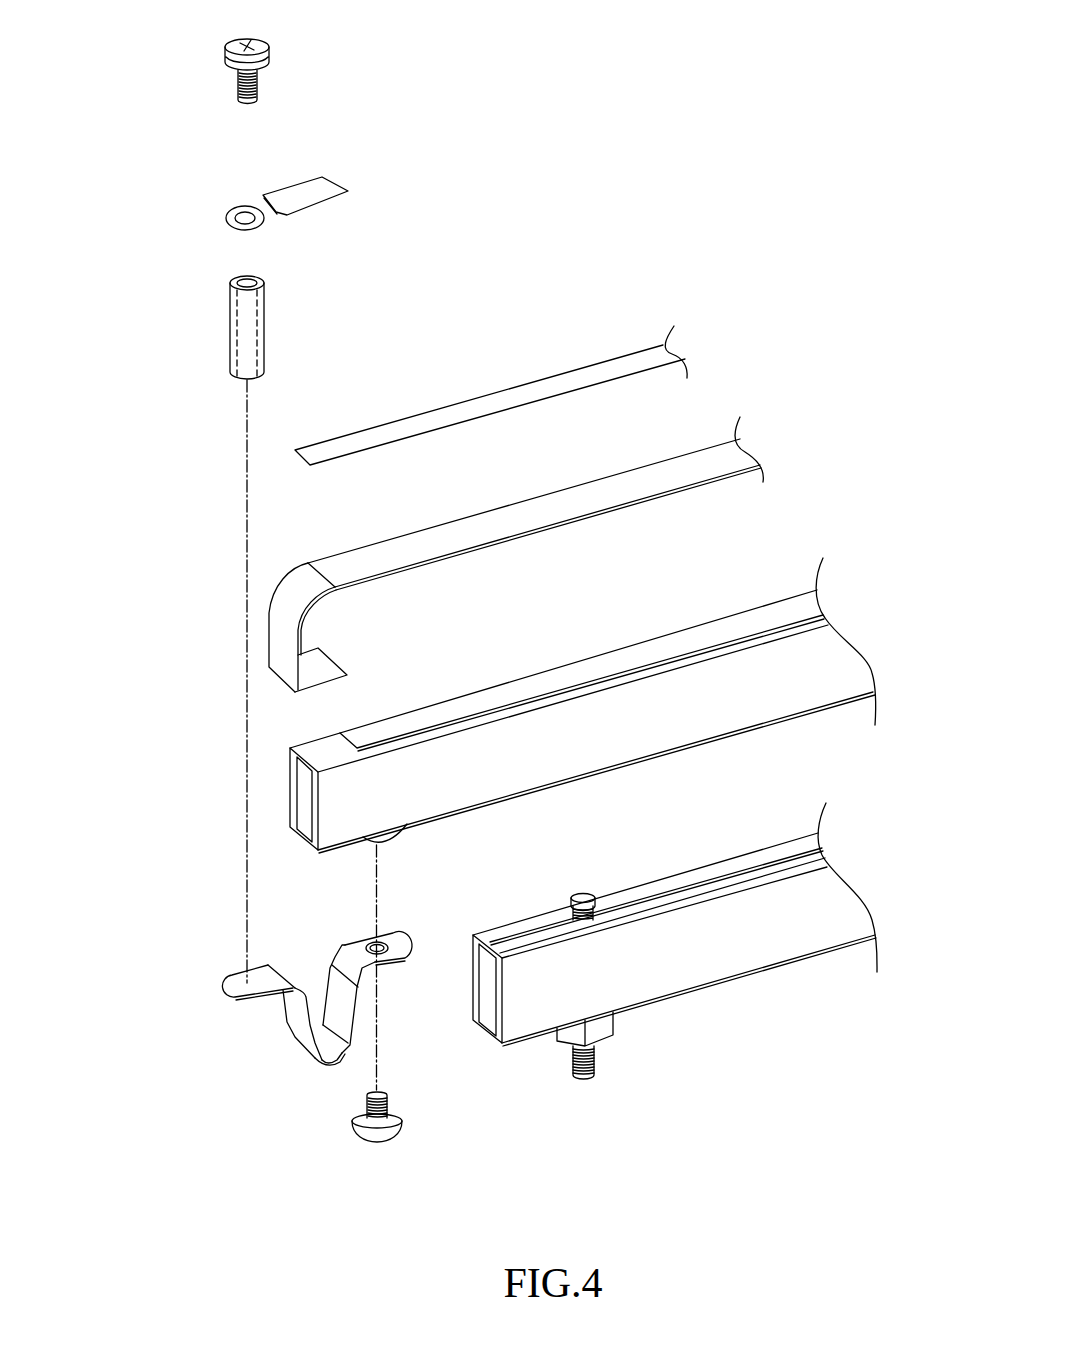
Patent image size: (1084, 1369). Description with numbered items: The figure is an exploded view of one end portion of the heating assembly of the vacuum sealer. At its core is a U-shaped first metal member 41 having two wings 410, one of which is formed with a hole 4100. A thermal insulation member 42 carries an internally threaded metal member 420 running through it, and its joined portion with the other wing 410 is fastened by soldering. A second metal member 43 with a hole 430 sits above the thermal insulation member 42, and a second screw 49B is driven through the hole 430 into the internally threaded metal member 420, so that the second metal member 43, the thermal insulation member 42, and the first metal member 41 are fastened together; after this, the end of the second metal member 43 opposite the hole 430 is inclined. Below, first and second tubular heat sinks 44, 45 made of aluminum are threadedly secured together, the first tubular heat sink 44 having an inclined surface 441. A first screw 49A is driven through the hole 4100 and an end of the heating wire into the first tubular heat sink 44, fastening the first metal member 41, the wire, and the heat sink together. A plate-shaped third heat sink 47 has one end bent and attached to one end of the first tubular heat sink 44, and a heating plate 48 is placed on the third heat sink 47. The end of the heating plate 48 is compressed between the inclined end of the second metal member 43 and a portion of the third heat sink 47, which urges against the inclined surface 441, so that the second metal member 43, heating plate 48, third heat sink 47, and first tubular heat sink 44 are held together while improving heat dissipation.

The U-shaped first metal member 41 is at (332, 1002).
The wings 410 is at (237, 980).
The hole 4100 is at (380, 942).
The thermal insulation member 42 is at (330, 320).
The internally threaded metal member 420 is at (252, 343).
The second metal member 43 is at (298, 185).
The hole 430 is at (243, 217).
The first tubular heat sink 44 is at (583, 705).
The inclined surface 441 is at (328, 740).
The second tubular heat sink 45 is at (700, 948).
The third heat sink 47 is at (578, 505).
The heating plate 48 is at (573, 378).
The first screw 49A is at (403, 1113).
The second screw 49B is at (258, 82).